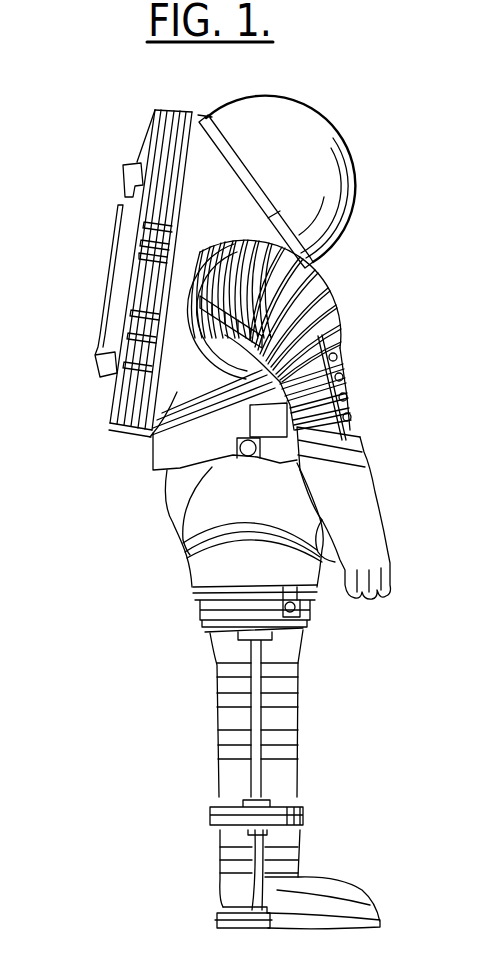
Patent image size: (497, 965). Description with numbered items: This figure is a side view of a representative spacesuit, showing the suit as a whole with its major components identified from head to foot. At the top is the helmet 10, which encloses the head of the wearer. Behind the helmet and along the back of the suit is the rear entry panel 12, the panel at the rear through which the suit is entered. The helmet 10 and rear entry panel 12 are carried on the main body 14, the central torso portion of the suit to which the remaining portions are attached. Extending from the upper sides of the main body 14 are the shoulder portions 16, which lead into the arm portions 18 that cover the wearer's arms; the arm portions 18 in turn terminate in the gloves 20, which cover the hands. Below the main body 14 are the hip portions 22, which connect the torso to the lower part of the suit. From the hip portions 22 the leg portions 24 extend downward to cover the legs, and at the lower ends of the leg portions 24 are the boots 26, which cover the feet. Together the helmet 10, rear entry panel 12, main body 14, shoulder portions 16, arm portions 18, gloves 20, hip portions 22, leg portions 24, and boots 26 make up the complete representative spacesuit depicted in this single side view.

The helmet 10 is at (332, 162).
The rear entry panel 12 is at (133, 200).
The main body 14 is at (150, 433).
The shoulder portions 16 is at (300, 273).
The arm portions 18 is at (312, 383).
The gloves 20 is at (358, 490).
The hip portions 22 is at (207, 572).
The leg portions 24 is at (298, 717).
The boots 26 is at (343, 897).